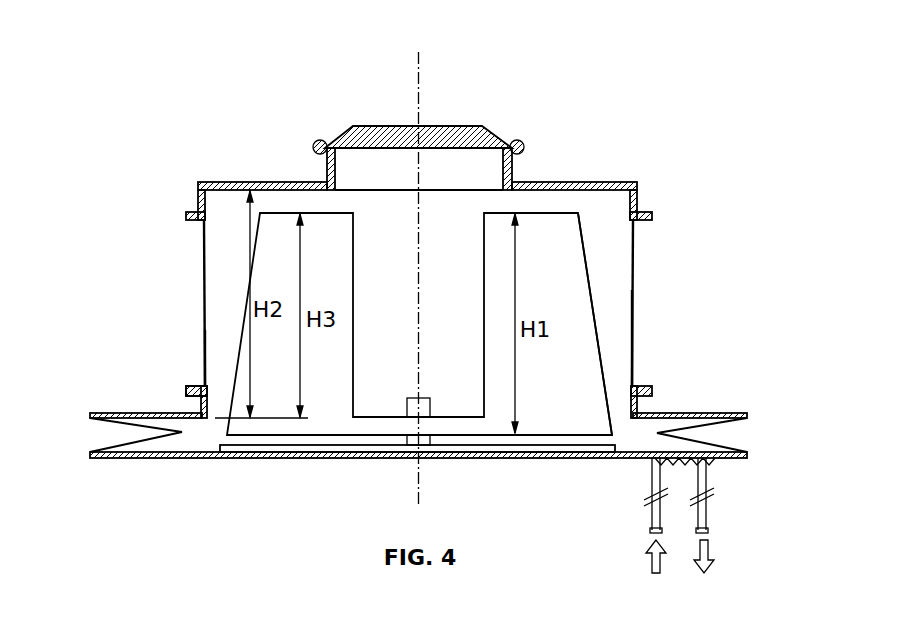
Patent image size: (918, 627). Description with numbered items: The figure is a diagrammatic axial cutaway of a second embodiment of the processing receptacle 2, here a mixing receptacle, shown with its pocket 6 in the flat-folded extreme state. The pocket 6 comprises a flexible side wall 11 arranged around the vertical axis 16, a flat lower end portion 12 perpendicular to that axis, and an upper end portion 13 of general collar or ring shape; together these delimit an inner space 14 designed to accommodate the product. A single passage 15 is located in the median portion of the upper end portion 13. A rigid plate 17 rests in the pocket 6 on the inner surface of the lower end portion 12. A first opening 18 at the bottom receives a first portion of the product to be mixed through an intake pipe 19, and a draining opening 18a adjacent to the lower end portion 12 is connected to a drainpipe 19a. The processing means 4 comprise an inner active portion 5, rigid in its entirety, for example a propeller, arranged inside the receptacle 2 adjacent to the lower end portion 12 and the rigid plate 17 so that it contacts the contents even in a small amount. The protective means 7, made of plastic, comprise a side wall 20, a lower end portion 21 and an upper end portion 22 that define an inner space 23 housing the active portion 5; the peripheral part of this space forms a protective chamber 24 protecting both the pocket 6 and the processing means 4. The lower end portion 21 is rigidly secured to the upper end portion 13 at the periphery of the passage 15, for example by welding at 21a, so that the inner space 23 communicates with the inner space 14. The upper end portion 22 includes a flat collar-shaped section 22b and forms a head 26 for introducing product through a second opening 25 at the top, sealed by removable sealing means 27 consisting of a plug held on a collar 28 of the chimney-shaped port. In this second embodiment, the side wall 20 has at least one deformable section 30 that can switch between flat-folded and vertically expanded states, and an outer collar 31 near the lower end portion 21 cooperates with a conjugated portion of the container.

The processing receptacle 2 is at (697, 203).
The processing means 4 is at (552, 423).
The inner active portion 5 is at (317, 403).
The pocket 6 is at (172, 446).
The protective means 7 is at (257, 168).
The flexible side wall 11 is at (120, 446).
The flat lower end portion 12 is at (146, 458).
The upper end portion 13 is at (120, 413).
The inner space 14 is at (700, 400).
The passage 15 is at (206, 345).
The vertical axis 16 is at (418, 90).
The rigid plate 17 is at (275, 452).
The first opening 18 is at (665, 433).
The draining opening 18a is at (712, 462).
The intake pipe 19 is at (648, 516).
The drainpipe 19a is at (708, 516).
The side wall 20 is at (633, 265).
The lower end portion 21 is at (667, 400).
The weld 21a is at (185, 405).
The upper end portion 22 is at (563, 182).
The flat collar section 22b is at (218, 182).
The inner space 23 is at (608, 205).
The protective chamber 24 is at (218, 268).
The second opening 25 is at (443, 160).
The head 26 is at (537, 155).
The removable sealing means 27 is at (363, 128).
The collar 28 is at (315, 142).
The deformable section 30 is at (632, 302).
The outer collar 31 is at (193, 387).